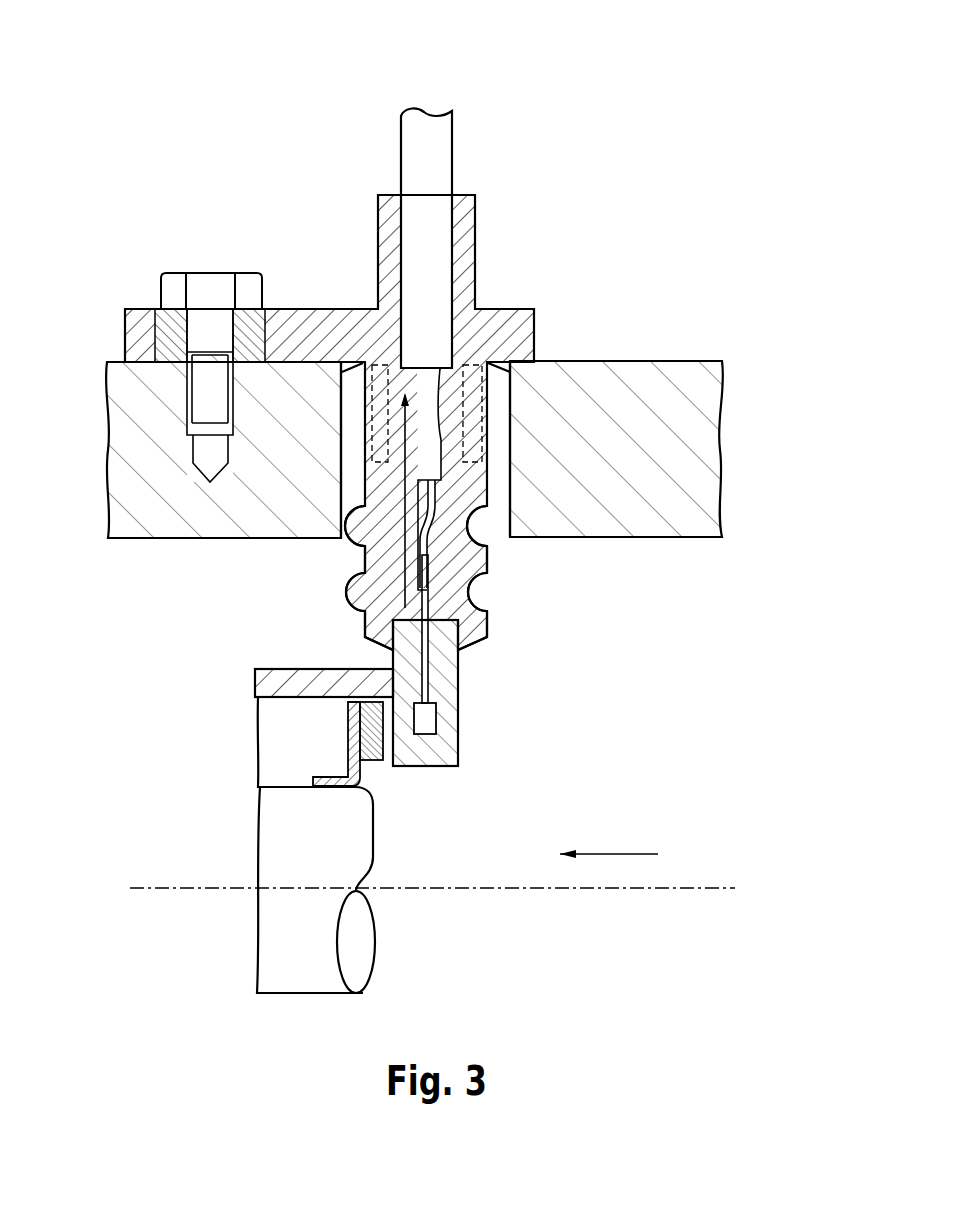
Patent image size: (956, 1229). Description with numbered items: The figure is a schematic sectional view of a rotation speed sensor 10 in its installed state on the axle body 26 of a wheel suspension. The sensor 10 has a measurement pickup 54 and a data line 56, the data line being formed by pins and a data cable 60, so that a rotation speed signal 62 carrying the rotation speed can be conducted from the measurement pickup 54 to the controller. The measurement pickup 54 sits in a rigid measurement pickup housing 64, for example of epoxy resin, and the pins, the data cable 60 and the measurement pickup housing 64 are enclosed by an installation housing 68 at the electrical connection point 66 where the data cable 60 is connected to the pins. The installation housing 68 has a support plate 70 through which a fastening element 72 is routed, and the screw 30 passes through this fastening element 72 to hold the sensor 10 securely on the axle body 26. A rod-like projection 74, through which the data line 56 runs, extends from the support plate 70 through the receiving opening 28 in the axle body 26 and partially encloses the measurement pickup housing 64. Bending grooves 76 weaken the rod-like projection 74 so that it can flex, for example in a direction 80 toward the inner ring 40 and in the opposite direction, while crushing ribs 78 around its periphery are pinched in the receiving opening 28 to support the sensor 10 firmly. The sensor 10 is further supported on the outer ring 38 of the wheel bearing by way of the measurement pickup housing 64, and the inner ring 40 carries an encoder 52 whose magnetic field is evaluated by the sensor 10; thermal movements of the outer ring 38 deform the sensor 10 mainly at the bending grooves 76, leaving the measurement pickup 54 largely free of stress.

The rotation speed sensor 10 is at (381, 384).
The axle body 26 is at (690, 378).
The receiving opening 28 is at (498, 473).
The screw 30 is at (212, 268).
The outer ring 38 is at (270, 687).
The inner ring 40 is at (355, 810).
The encoder 52 is at (350, 732).
The measurement pickup 54 is at (437, 722).
The data line 56 is at (430, 103).
The data cable 60 is at (410, 150).
The rotation speed signal 62 is at (370, 593).
The measurement pickup housing 64 is at (442, 690).
The electrical connection point 66 is at (445, 570).
The installation housing 68 is at (367, 425).
The support plate 70 is at (312, 315).
The fastening element 72 is at (172, 325).
The rod-like projection 74 is at (468, 222).
The bending grooves 76 is at (472, 524).
The crushing ribs 78 is at (355, 427).
The direction 80 is at (638, 854).